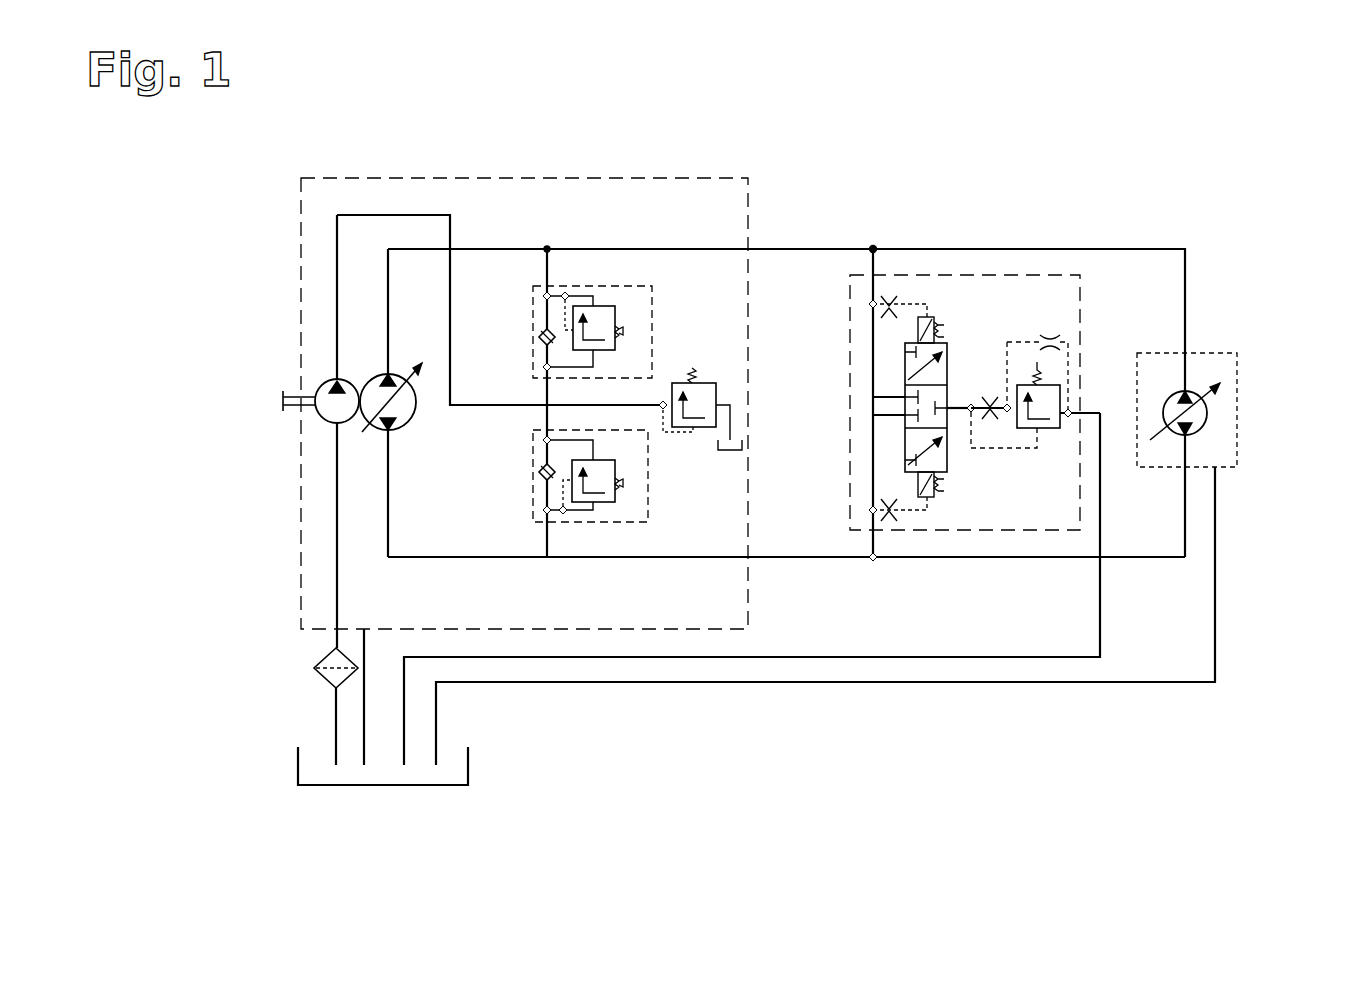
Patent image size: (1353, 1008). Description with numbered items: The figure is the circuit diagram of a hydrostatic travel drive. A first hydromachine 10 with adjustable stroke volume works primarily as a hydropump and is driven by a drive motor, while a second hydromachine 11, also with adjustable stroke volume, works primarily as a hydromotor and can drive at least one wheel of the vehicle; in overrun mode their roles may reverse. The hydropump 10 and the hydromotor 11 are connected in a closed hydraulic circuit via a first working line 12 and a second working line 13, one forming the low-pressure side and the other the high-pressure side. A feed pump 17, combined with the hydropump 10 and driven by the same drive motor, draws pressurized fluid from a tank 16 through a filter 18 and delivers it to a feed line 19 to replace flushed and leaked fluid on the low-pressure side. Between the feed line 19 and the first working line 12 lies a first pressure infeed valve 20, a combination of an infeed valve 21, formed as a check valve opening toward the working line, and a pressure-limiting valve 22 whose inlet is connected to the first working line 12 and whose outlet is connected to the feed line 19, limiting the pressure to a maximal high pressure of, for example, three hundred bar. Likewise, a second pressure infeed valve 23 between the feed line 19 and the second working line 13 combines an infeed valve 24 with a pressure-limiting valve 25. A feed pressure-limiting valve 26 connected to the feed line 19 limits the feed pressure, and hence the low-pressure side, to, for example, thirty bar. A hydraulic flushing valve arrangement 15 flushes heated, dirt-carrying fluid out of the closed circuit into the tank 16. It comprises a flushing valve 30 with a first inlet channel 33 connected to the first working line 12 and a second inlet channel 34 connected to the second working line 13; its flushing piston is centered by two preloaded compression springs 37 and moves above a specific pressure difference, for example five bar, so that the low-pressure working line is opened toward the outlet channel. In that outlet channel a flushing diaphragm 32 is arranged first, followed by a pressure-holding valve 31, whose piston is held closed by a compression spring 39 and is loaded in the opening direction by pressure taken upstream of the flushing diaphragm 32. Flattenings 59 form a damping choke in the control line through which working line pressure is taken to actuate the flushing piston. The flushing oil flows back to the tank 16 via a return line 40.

The first hydromachine 10 is at (370, 385).
The second hydromachine 11 is at (1205, 402).
The first working line 12 is at (1120, 249).
The second working line 13 is at (1027, 560).
The hydraulic flushing valve arrangement 15 is at (1037, 275).
The tank 16 is at (382, 786).
The feed pump 17 is at (330, 410).
The filter 18 is at (330, 662).
The feed line 19 is at (395, 213).
The first pressure infeed valve 20 is at (603, 287).
The infeed valve 21 is at (540, 335).
The pressure-limiting valve 22 is at (612, 342).
The second pressure infeed valve 23 is at (585, 525).
The infeed valve 24 is at (540, 478).
The pressure-limiting valve 25 is at (612, 500).
The feed pressure-limiting valve 26 is at (703, 430).
The flushing valve 30 is at (905, 365).
The pressure-holding valve 31 is at (1045, 432).
The flushing diaphragm 32 is at (990, 396).
The first inlet channel 33 is at (870, 252).
The second inlet channel 34 is at (870, 553).
The compression springs 37 is at (937, 322).
The compression spring 39 is at (1046, 340).
The return line 40 is at (1100, 606).
The flattenings 59 is at (889, 294).